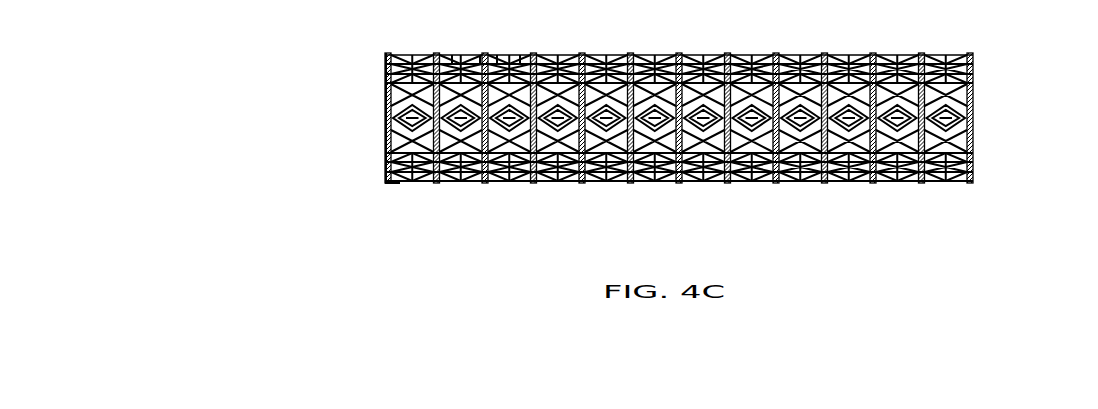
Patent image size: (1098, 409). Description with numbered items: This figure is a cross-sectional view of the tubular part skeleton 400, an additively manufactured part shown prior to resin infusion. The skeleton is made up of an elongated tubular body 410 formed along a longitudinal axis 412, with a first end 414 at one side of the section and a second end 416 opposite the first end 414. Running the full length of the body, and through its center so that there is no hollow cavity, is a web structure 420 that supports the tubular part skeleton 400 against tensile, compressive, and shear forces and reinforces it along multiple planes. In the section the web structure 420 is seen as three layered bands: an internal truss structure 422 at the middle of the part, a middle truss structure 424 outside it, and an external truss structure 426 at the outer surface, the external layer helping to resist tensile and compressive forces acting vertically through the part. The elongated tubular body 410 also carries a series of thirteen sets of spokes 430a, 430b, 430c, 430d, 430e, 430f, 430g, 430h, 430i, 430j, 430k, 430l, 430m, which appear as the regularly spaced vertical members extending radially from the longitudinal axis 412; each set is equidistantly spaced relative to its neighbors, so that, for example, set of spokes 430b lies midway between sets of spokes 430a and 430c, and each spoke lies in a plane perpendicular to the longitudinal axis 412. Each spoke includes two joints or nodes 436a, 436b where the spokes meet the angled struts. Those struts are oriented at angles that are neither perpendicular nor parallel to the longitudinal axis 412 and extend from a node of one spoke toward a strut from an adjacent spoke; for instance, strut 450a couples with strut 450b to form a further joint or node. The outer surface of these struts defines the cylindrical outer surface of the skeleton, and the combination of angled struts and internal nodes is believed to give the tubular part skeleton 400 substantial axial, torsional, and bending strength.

The tubular part skeleton 400 is at (357, 86).
The elongated tubular body 410 is at (1034, 34).
The longitudinal axis 412 is at (385, 119).
The first end 414 is at (387, 162).
The second end 416 is at (973, 165).
The web structure 420 is at (1036, 55).
The internal truss structure 422 is at (974, 105).
The middle truss structure 424 is at (974, 80).
The external truss structure 426 is at (974, 55).
The set of spokes 430a is at (388, 184).
The set of spokes 430b is at (436, 184).
The set of spokes 430c is at (485, 184).
The set of spokes 430d is at (534, 184).
The set of spokes 430e is at (582, 184).
The set of spokes 430f is at (630, 184).
The set of spokes 430g is at (679, 184).
The set of spokes 430h is at (728, 184).
The set of spokes 430i is at (776, 184).
The set of spokes 430j is at (824, 184).
The set of spokes 430k is at (873, 184).
The set of spokes 430l is at (922, 184).
The set of spokes 430m is at (970, 184).
The node 436a is at (455, 56).
The node 436b is at (480, 60).
The strut 450a is at (500, 56).
The strut 450b is at (520, 56).